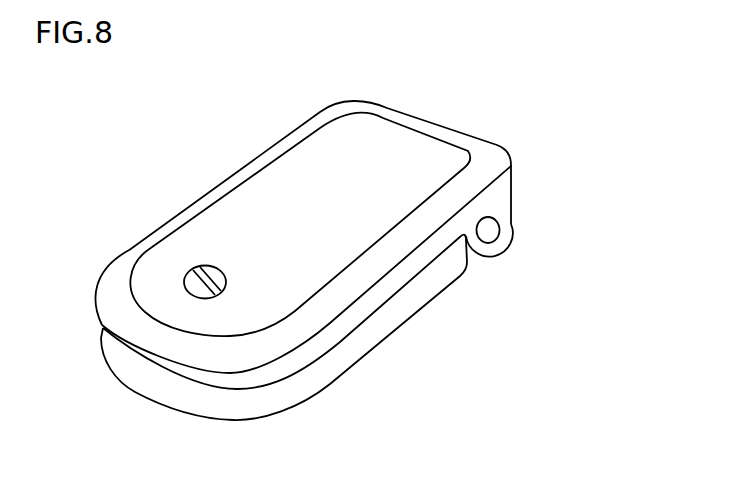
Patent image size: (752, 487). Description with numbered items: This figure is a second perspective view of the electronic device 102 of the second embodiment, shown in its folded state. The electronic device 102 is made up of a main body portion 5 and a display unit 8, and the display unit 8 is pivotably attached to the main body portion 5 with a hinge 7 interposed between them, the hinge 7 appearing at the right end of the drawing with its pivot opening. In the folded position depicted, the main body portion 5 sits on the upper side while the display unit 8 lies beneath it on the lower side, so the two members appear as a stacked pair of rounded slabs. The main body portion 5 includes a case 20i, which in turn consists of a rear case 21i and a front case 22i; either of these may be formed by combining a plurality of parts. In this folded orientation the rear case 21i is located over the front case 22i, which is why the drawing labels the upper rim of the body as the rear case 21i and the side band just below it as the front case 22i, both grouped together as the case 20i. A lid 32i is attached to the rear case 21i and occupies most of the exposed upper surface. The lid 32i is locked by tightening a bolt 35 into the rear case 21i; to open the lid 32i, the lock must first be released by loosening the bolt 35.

The electronic device 102 is at (477, 98).
The main body portion 5 is at (100, 278).
The hinge 7 is at (492, 231).
The display unit 8 is at (121, 381).
The lid 32i is at (268, 190).
The bolt 35 is at (207, 265).
The case 20i is at (458, 398).
The rear case 21i is at (397, 255).
The front case 22i is at (368, 307).